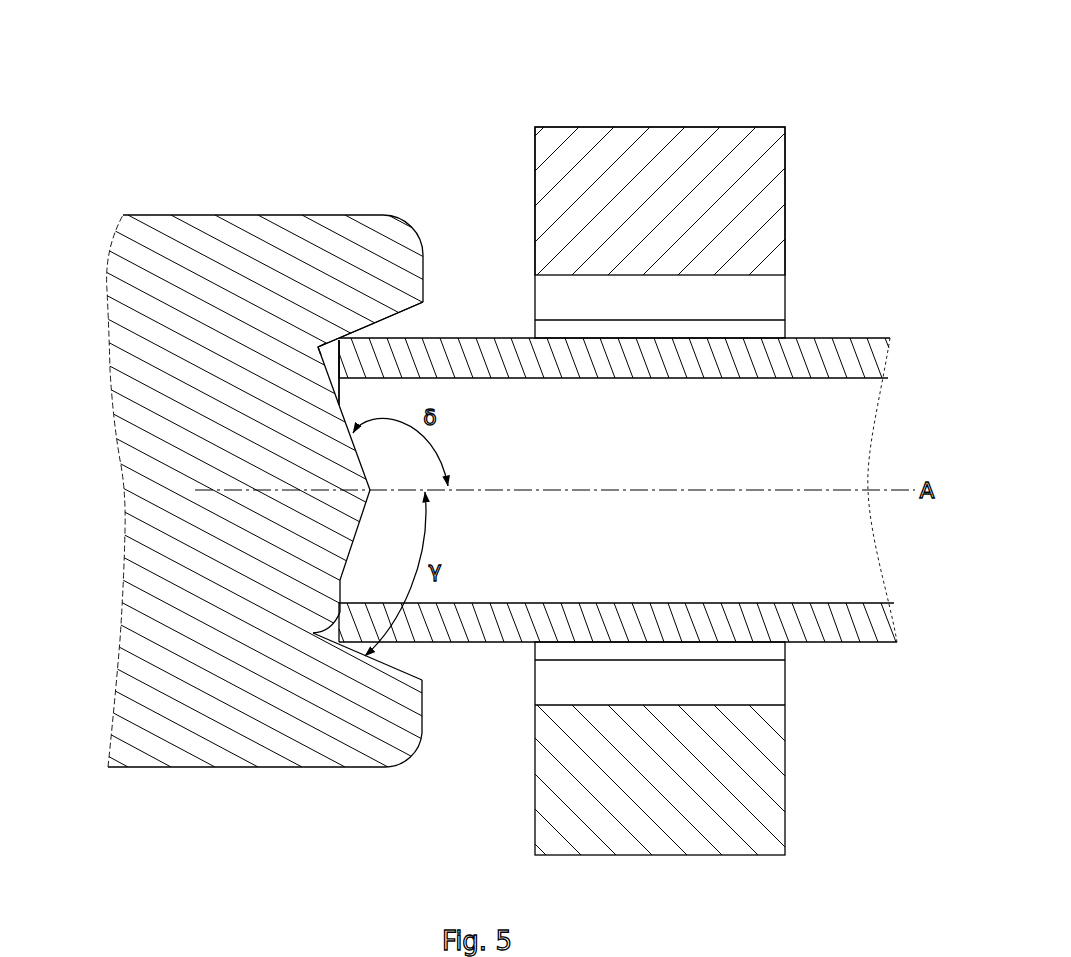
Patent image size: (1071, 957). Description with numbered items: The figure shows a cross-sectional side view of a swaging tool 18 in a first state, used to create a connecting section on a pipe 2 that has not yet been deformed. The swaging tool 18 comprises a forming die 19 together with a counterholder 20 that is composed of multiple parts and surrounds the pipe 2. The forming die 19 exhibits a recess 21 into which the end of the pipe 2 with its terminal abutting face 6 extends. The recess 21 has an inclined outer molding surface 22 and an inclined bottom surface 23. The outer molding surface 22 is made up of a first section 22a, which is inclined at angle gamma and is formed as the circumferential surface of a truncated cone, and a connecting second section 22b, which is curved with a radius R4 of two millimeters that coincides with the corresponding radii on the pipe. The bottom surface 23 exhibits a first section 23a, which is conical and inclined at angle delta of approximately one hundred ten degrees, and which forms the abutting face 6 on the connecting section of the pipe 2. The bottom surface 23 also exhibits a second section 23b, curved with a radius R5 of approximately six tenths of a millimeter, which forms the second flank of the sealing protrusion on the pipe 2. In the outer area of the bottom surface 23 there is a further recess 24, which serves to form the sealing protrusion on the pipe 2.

The forming die 19 is at (190, 265).
The outer molding surface 22 is at (361, 317).
The first section 22a is at (400, 311).
The second section 22b is at (320, 347).
The recess 21 is at (407, 325).
The recess 24 is at (318, 345).
The second section 23b is at (316, 352).
The bottom surface 23 is at (336, 409).
The first section 23a is at (353, 448).
The radius R5 is at (314, 624).
The radius R4 is at (314, 643).
The pipe 2 is at (817, 350).
The terminal abutting face 6 is at (343, 352).
The swaging tool 18 is at (558, 136).
The counterholder 20 is at (722, 230).